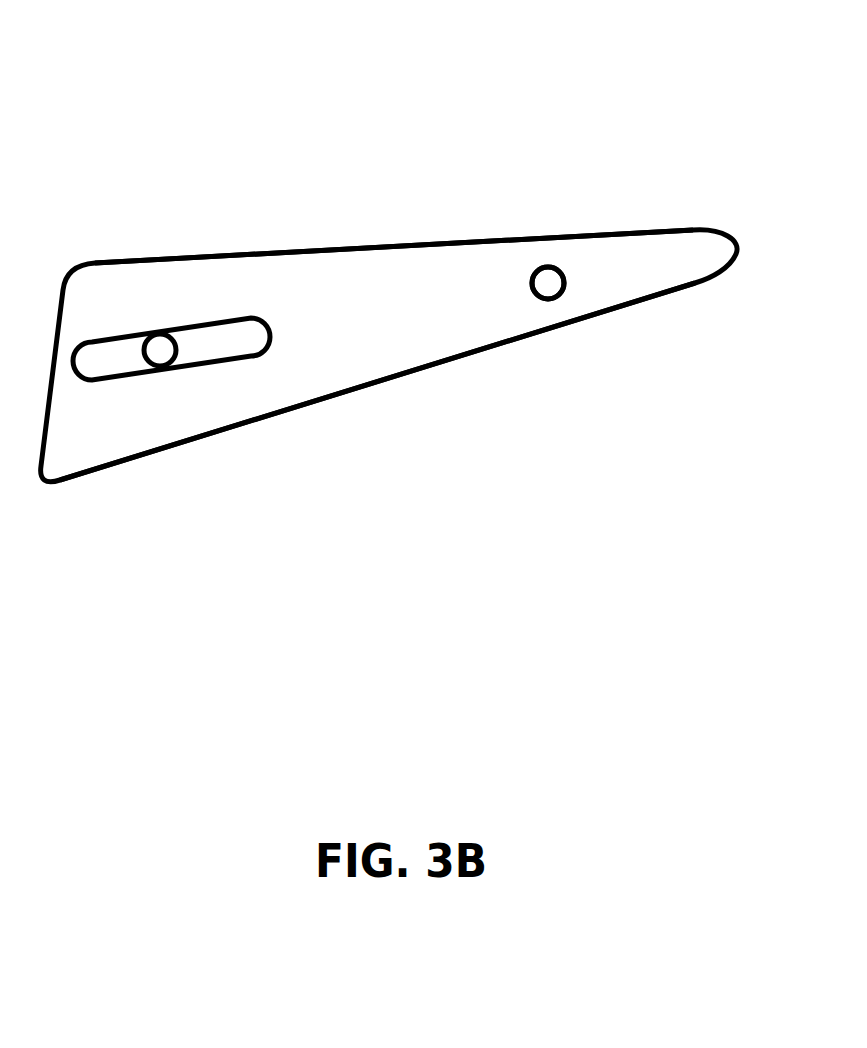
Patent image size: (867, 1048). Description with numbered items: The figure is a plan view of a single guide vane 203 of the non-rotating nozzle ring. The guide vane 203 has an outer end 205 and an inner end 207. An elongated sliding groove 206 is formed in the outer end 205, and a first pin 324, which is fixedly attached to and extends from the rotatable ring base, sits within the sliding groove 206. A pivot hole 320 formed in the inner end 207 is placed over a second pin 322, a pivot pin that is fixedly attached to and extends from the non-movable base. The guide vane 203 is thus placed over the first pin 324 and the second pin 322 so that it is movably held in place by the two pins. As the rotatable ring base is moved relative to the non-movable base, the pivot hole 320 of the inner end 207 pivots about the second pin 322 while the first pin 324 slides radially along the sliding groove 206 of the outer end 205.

The guide vane 203 is at (279, 118).
The outer end 205 is at (145, 455).
The sliding groove 206 is at (230, 360).
The inner end 207 is at (645, 232).
The pivot hole 320 is at (535, 275).
The second pin 322 is at (547, 282).
The first pin 324 is at (162, 351).